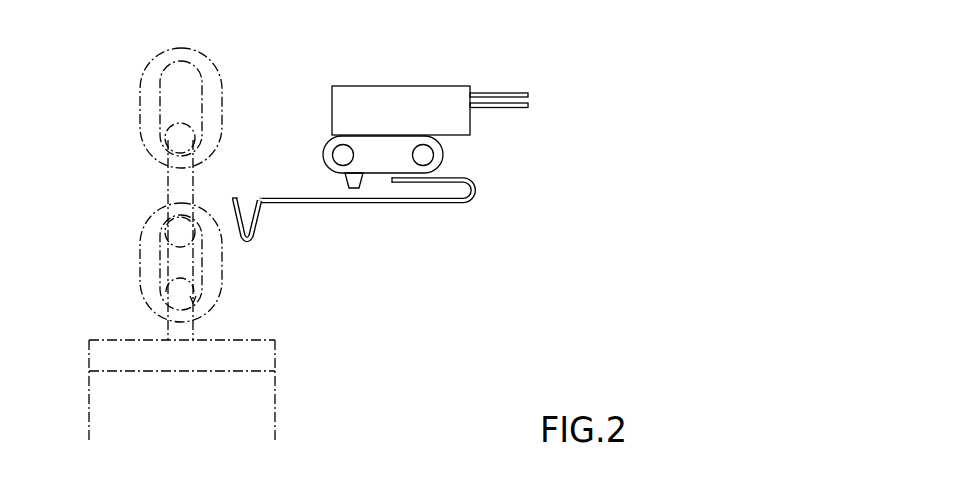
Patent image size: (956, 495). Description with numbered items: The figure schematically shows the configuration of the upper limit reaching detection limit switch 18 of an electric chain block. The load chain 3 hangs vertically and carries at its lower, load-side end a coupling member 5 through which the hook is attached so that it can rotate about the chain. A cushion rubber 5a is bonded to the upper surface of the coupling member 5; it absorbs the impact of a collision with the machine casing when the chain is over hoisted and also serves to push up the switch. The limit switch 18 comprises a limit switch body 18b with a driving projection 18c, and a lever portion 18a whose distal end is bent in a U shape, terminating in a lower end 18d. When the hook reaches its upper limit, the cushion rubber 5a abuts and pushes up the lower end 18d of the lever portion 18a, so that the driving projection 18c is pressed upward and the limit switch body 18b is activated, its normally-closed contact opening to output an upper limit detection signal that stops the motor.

The load chain 3 is at (141, 88).
The coupling member 5 is at (84, 405).
The cushion rubber 5a is at (113, 348).
The upper limit reaching detection limit switch 18 is at (352, 244).
The lever portion 18a is at (316, 203).
The limit switch body 18b is at (404, 86).
The driving projection 18c is at (354, 188).
The lower end of lever portion 18d is at (246, 244).